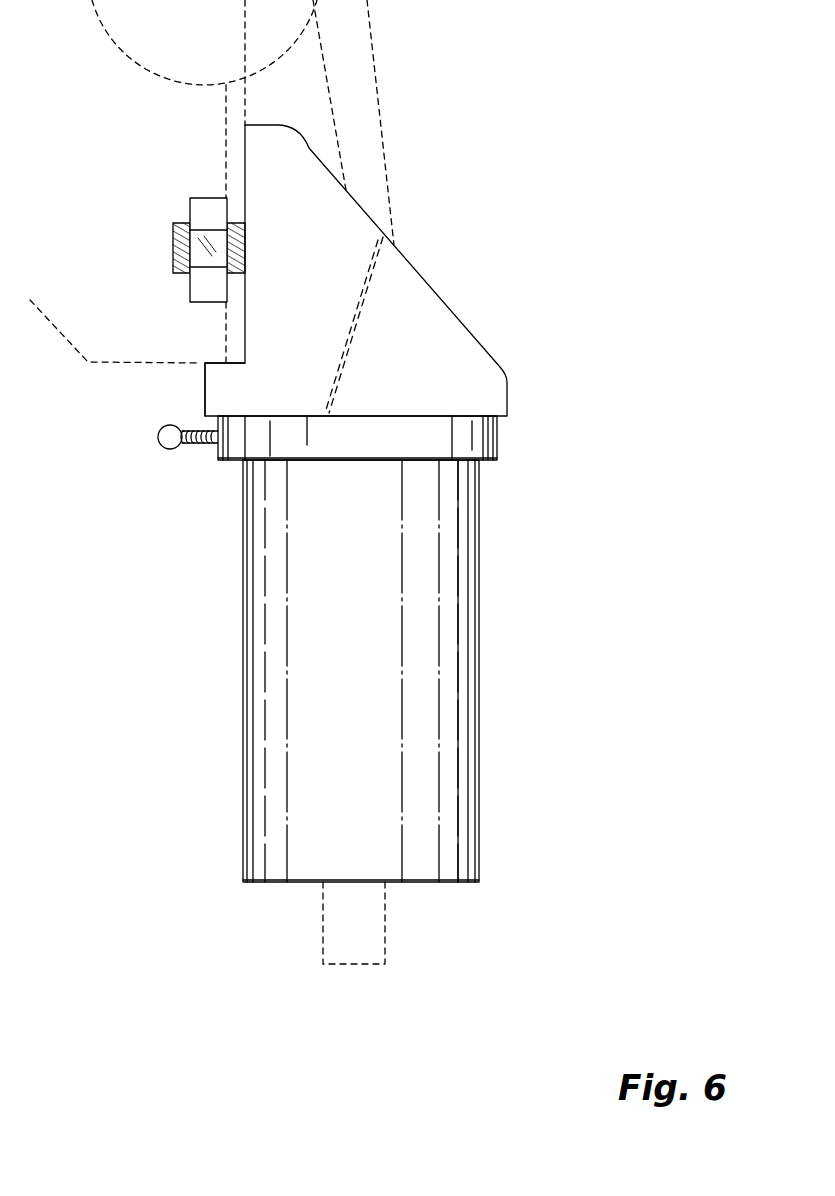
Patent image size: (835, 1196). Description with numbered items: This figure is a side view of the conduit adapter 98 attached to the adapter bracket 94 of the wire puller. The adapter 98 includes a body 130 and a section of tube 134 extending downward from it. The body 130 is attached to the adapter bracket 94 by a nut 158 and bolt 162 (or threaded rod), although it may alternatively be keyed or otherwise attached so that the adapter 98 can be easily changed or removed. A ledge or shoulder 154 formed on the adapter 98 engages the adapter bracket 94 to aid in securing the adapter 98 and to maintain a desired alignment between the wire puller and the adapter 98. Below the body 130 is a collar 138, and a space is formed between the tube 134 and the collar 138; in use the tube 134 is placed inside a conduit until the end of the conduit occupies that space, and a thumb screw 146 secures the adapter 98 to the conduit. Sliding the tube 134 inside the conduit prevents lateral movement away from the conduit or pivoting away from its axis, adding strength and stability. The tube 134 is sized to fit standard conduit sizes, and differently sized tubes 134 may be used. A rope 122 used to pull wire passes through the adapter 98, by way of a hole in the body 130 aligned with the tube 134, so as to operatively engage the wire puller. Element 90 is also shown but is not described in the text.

The disc 90 is at (290, 10).
The rope 122 is at (360, 118).
The adapter 98 is at (478, 226).
The adapter bracket 94 is at (125, 217).
The bolt 162 is at (173, 258).
The nut 158 is at (212, 293).
The ledge 154 is at (230, 366).
The body 130 is at (407, 330).
The collar 138 is at (498, 430).
The thumb screw 146 is at (170, 445).
The tube 134 is at (420, 652).